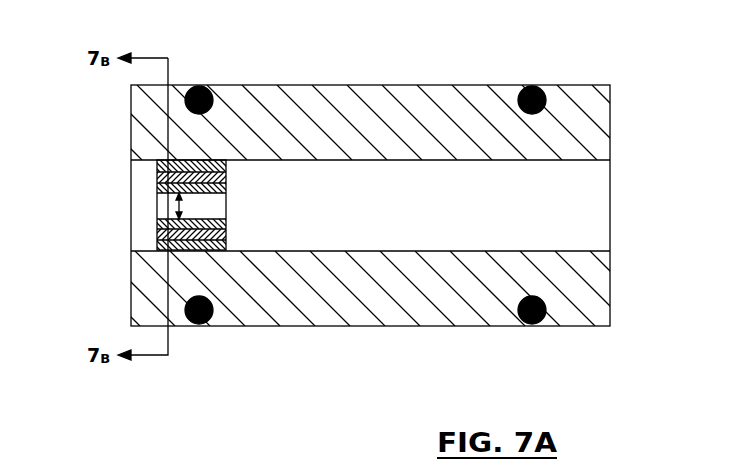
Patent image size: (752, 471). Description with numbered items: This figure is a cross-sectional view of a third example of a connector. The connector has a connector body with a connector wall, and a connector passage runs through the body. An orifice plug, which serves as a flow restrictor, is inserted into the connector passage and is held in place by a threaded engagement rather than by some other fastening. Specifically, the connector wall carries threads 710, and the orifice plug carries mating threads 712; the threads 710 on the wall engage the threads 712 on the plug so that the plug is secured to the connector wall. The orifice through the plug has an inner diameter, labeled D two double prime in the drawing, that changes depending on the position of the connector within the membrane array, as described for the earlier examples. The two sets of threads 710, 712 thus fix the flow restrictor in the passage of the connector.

The threads 710 is at (157, 163).
The threads 712 is at (157, 177).